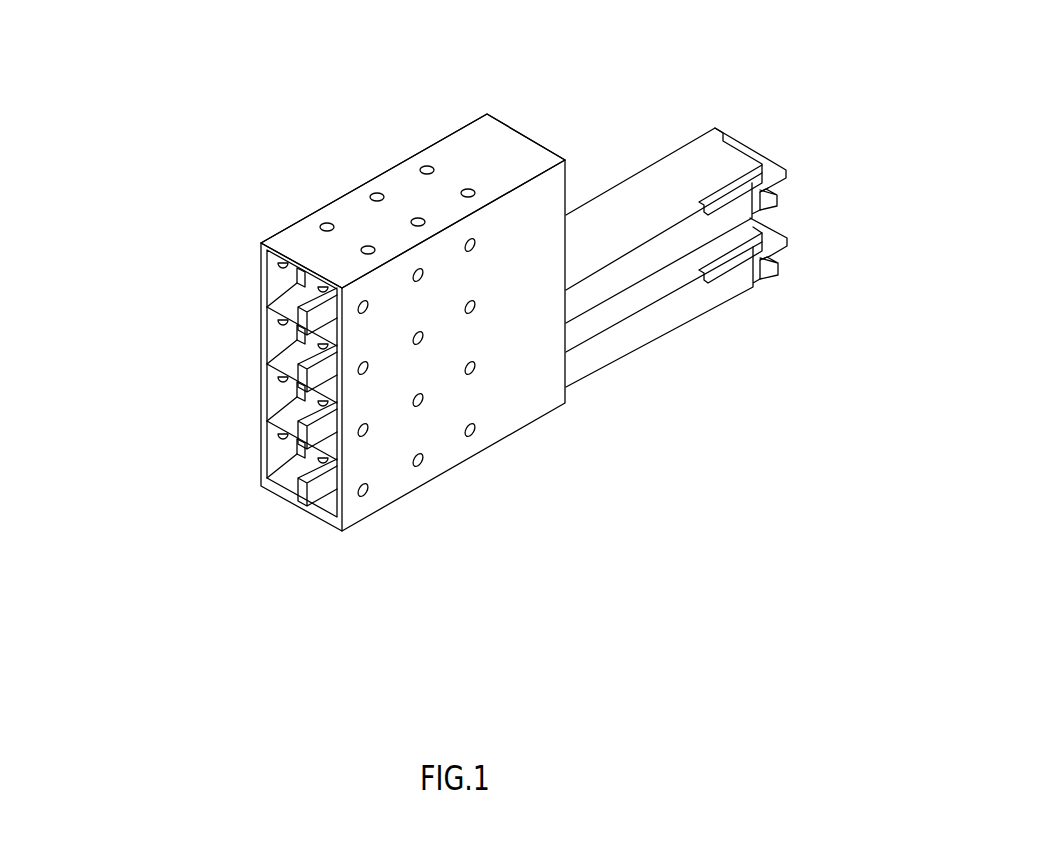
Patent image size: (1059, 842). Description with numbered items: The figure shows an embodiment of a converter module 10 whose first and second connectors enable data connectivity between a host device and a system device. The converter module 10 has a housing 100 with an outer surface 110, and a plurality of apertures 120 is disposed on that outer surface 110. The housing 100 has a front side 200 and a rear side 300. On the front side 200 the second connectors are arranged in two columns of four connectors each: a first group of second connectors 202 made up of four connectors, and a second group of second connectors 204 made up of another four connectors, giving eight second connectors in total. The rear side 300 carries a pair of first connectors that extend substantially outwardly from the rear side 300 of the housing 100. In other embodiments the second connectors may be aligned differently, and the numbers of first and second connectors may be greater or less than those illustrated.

The converter module 10 is at (233, 124).
The housing 100 is at (543, 406).
The outer surface 110 is at (465, 148).
The apertures 120 is at (468, 193).
The front side 200 is at (234, 541).
The first group of second connectors 202 is at (170, 310).
The second group of second connectors 204 is at (497, 500).
The rear side 300 is at (720, 98).